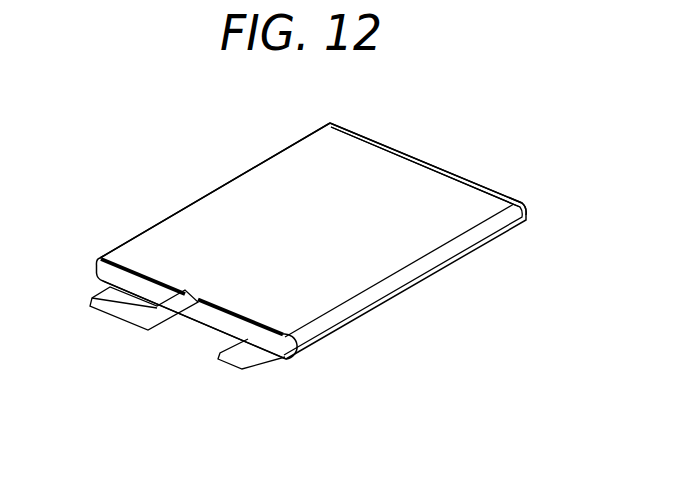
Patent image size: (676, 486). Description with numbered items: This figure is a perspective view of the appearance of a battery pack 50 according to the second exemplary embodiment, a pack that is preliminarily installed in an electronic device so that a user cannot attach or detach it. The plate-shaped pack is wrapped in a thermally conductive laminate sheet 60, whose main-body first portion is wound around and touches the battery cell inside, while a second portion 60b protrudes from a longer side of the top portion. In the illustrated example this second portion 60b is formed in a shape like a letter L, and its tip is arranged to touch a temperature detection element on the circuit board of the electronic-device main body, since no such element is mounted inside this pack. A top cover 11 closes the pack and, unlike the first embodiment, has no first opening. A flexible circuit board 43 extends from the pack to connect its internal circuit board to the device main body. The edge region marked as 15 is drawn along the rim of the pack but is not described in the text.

The battery pack 50 is at (483, 350).
The rim portion 15 is at (476, 183).
The thermally conductive laminate sheet 60 is at (225, 186).
The second portion 60b is at (138, 325).
The top cover 11 is at (214, 329).
The flexible circuit board 43 is at (266, 362).